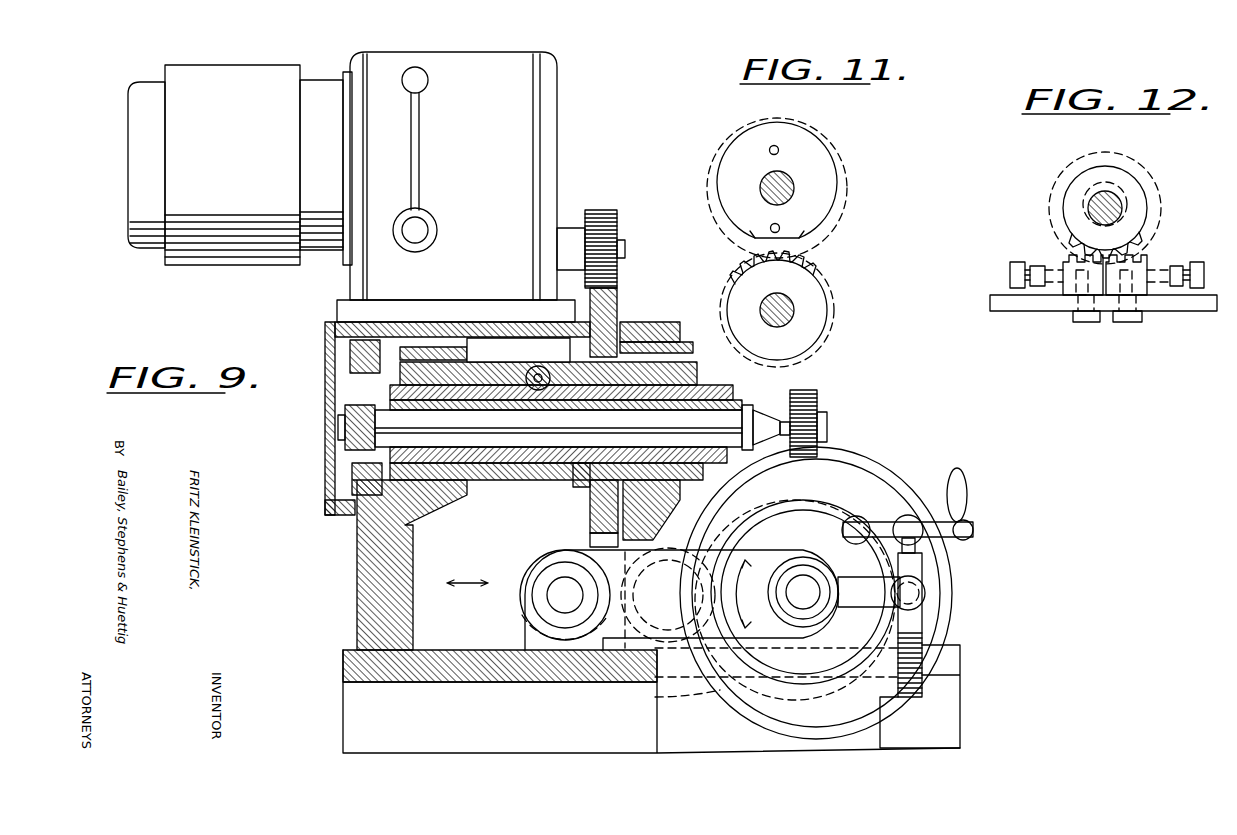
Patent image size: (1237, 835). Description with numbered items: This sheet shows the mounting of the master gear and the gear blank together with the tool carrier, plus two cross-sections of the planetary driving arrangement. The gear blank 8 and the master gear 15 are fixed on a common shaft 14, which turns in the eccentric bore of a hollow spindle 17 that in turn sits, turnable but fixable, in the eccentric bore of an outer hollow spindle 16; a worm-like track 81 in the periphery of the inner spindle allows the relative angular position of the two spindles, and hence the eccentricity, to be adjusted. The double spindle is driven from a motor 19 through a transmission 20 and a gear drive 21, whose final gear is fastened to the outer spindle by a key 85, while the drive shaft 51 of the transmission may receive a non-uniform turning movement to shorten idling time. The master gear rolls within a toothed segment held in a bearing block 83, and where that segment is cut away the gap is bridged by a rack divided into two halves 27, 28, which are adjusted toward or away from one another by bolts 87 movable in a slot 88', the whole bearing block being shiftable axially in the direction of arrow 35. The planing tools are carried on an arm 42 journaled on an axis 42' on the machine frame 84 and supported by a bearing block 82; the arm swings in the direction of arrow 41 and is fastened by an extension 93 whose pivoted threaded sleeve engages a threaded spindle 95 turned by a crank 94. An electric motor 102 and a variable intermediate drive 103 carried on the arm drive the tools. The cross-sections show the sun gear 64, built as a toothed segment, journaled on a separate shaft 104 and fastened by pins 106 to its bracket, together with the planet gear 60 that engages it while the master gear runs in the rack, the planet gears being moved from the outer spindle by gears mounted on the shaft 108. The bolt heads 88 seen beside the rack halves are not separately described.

In FIG. 9, the gear blank 8 is at (827, 400).
In FIG. 9, the shaft 14 is at (506, 440).
In FIG. 12, the shaft 14 is at (1125, 210).
In FIG. 9, the master gear 15 is at (355, 398).
In FIG. 12, the master gear 15 is at (1145, 177).
In FIG. 9, the hollow spindle 16 is at (472, 355).
In FIG. 9, the hollow spindle 17 is at (548, 361).
In FIG. 9, the motor 19 is at (215, 256).
In FIG. 9, the transmission 20 is at (527, 120).
In FIG. 9, the gear drive 21 is at (612, 310).
In FIG. 12, the rack half 27 is at (1055, 270).
In FIG. 12, the rack half 28 is at (1142, 266).
In FIG. 9, the arrow 35 is at (467, 571).
In FIG. 9, the arrow 41 is at (787, 592).
In FIG. 9, the arm 42 is at (644, 628).
In FIG. 9, the axis 42' is at (679, 586).
In FIG. 9, the drive shaft 51 is at (625, 250).
In FIG. 11, the planet gear 60 is at (822, 292).
In FIG. 11, the sun gear 64 is at (810, 131).
In FIG. 9, the worm-like track 81 is at (547, 462).
In FIG. 9, the bearing block 82 is at (520, 662).
In FIG. 9, the bearing block 83 is at (332, 348).
In FIG. 12, the bearing block 83 is at (1027, 306).
In FIG. 9, the machine frame 84 is at (536, 392).
In FIG. 9, the key 85 is at (642, 328).
In FIG. 12, the bolts 87 is at (1087, 322).
In FIG. 12, the bolts 88 is at (1089, 267).
In FIG. 12, the slot 88' is at (1168, 329).
In FIG. 9, the extension 93 is at (930, 593).
In FIG. 9, the crank 94 is at (968, 502).
In FIG. 9, the threaded spindle 95 is at (925, 658).
In FIG. 9, the electric motor 102 is at (868, 488).
In FIG. 9, the variable intermediate drive 103 is at (748, 522).
In FIG. 11, the shaft 104 is at (795, 188).
In FIG. 12, the shaft 104 is at (1112, 172).
In FIG. 11, the pins 106 is at (780, 150).
In FIG. 9, the shaft 108 is at (627, 692).